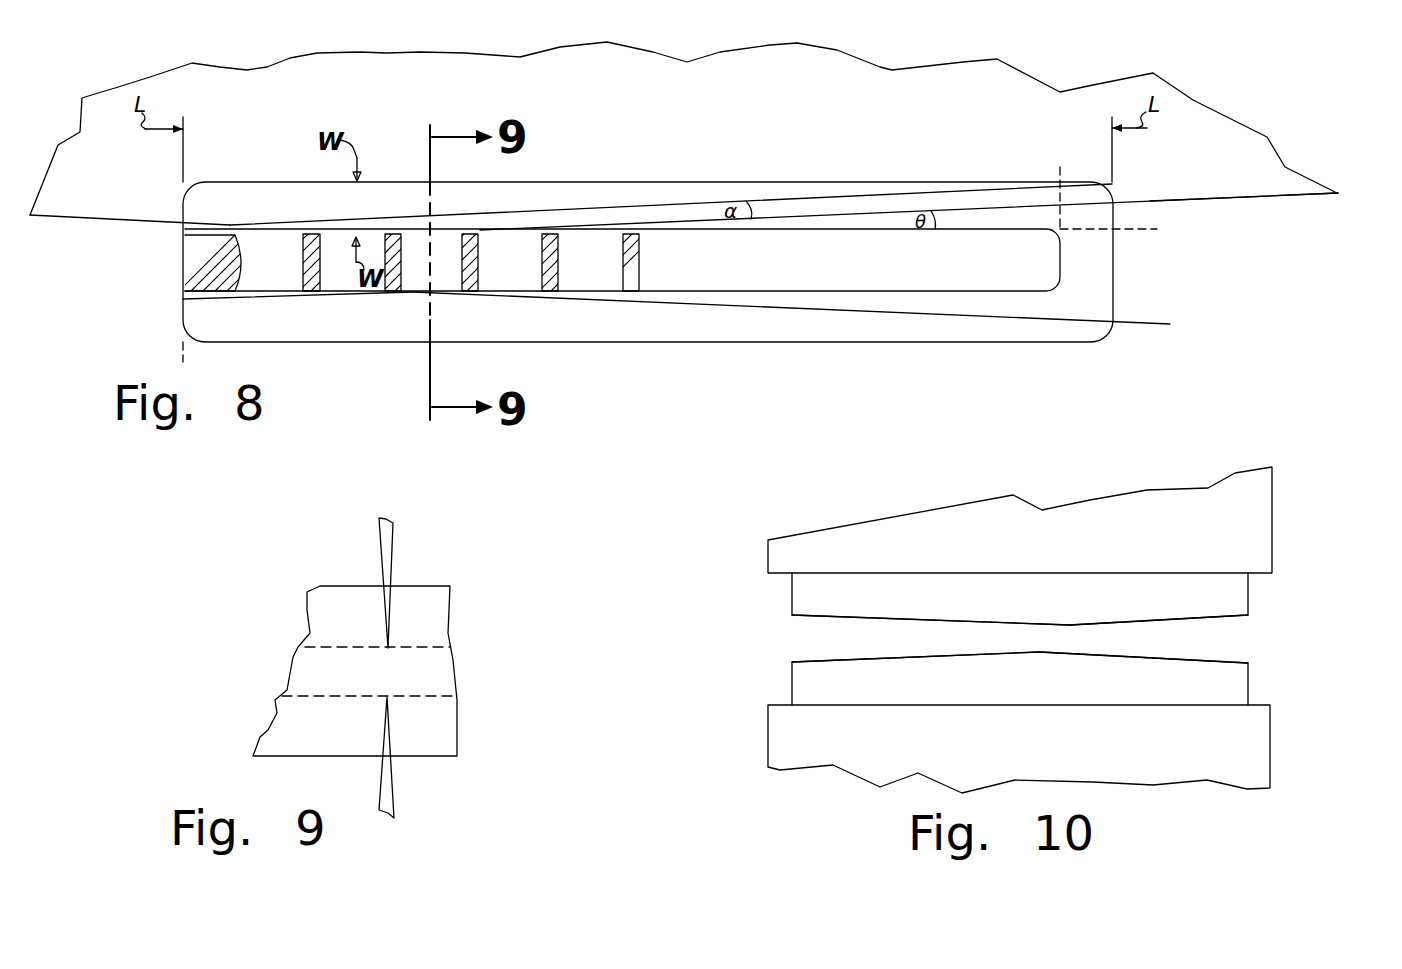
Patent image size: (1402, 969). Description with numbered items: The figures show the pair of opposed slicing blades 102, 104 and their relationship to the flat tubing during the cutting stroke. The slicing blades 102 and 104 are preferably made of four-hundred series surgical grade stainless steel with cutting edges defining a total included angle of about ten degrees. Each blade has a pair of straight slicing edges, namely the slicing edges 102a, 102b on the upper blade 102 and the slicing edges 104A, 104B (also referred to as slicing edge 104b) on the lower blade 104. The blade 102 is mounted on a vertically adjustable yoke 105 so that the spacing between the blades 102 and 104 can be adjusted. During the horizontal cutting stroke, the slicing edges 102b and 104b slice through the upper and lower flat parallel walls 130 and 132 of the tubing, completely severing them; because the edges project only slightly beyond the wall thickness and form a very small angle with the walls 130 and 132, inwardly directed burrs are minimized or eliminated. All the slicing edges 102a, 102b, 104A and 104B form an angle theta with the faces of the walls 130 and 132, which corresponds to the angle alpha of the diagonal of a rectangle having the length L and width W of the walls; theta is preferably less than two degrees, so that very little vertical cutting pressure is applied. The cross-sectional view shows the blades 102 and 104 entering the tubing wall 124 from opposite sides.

In FIG. 8, the slicing blade 102 is at (1212, 178).
In FIG. 9, the slicing blade 102 is at (383, 548).
In FIG. 10, the slicing blade 102 is at (808, 588).
In FIG. 10, the slicing edge 102a is at (813, 617).
In FIG. 8, the slicing edge 102b is at (1169, 195).
In FIG. 10, the slicing edge 102b is at (1220, 617).
In FIG. 8, the slicing blade 104 is at (332, 318).
In FIG. 9, the slicing blade 104 is at (383, 732).
In FIG. 10, the slicing blade 104 is at (808, 685).
In FIG. 10, the slicing edge 104A is at (820, 659).
In FIG. 10, the slicing edge 104B is at (1220, 662).
In FIG. 8, the slicing edge 104b is at (863, 308).
In FIG. 10, the vertically adjustable yoke 105 is at (1250, 515).
In FIG. 8, the wall 124 is at (405, 262).
In FIG. 9, the wall 124 is at (418, 663).
In FIG. 8, the upper flat parallel wall 130 is at (685, 182).
In FIG. 8, the lower flat parallel wall 132 is at (578, 342).